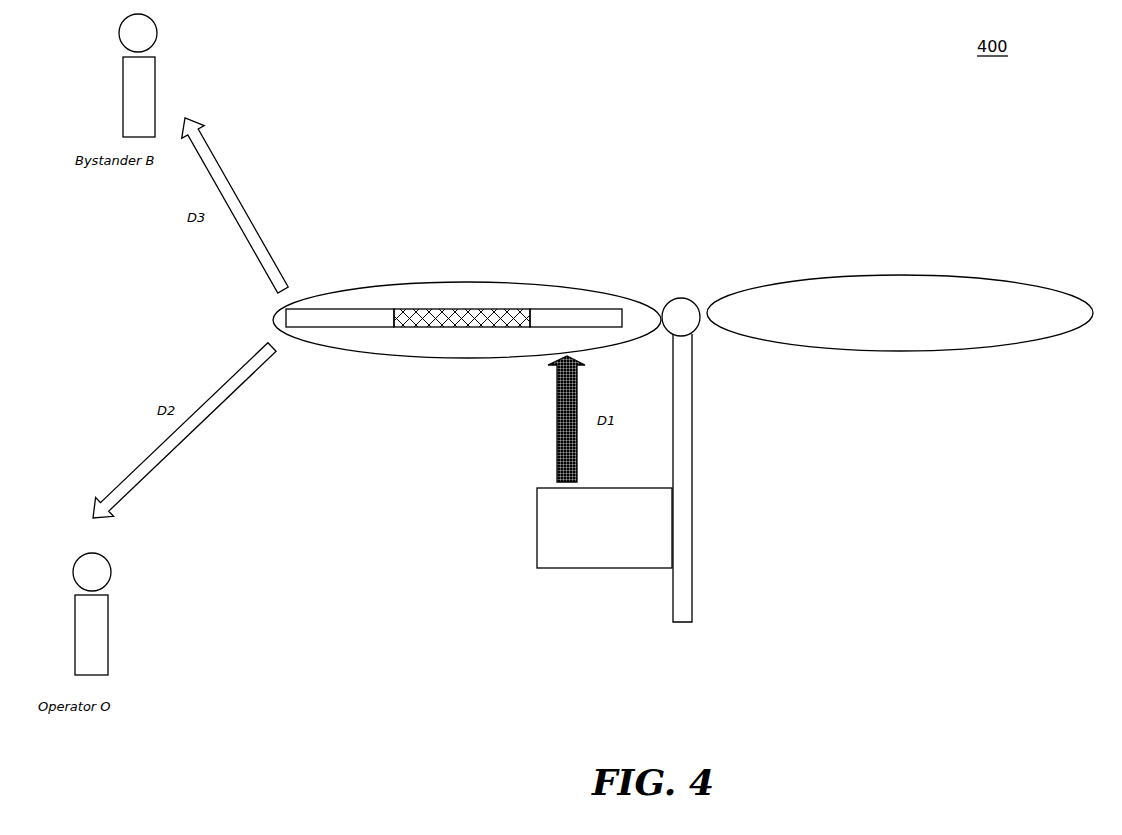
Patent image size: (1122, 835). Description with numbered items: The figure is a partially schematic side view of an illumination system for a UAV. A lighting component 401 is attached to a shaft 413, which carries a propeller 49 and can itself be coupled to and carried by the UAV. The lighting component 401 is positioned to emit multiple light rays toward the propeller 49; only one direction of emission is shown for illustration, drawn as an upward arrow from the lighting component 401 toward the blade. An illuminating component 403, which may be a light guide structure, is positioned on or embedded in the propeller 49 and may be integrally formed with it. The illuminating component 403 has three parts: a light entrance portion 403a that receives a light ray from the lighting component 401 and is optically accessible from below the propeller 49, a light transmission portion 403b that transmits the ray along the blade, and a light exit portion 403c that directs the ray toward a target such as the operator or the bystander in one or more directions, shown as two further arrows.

The illuminating component 403 is at (633, 305).
The light entrance portion 403a is at (572, 308).
The light transmission portion 403b is at (475, 307).
The light exit portion 403c is at (355, 307).
The propeller 49 is at (913, 275).
The shaft 413 is at (687, 535).
The lighting component 401 is at (604, 528).